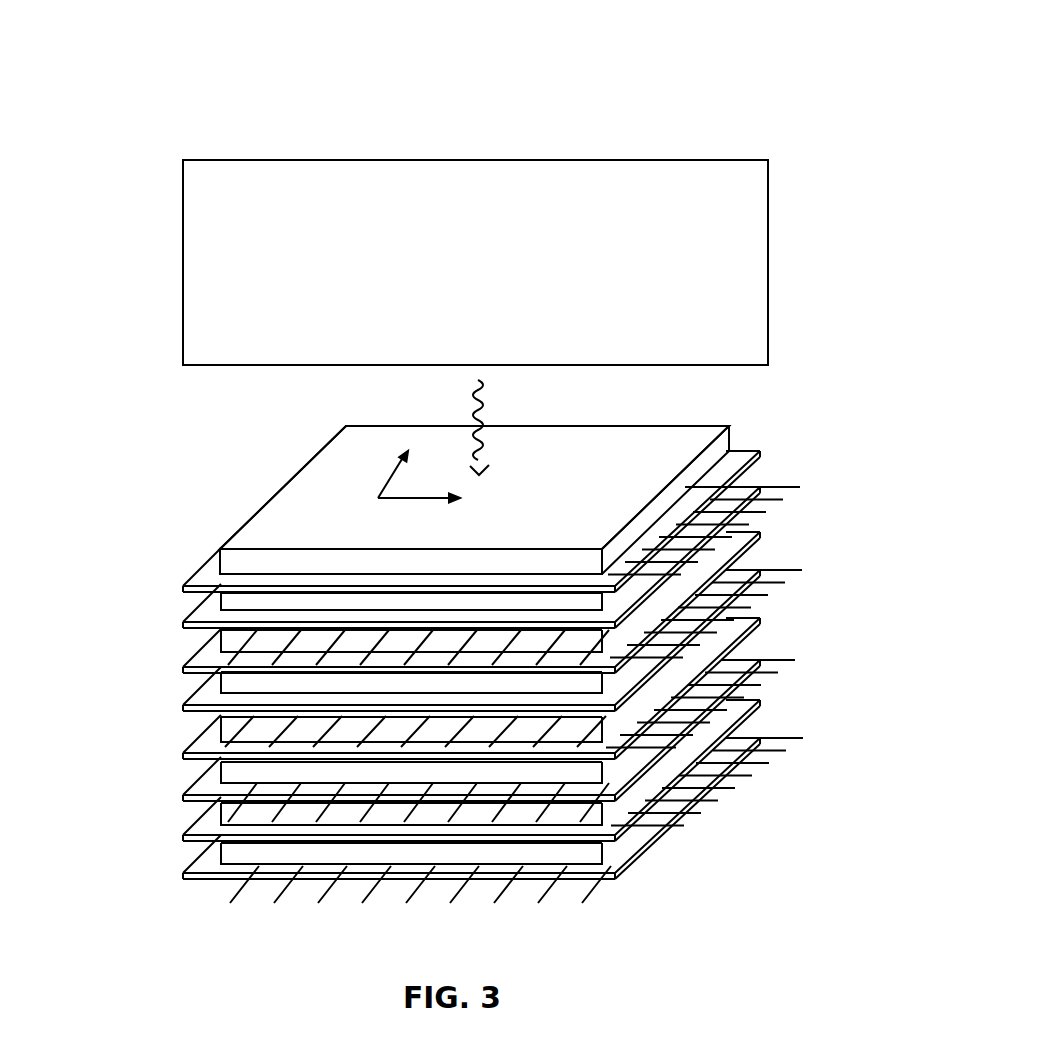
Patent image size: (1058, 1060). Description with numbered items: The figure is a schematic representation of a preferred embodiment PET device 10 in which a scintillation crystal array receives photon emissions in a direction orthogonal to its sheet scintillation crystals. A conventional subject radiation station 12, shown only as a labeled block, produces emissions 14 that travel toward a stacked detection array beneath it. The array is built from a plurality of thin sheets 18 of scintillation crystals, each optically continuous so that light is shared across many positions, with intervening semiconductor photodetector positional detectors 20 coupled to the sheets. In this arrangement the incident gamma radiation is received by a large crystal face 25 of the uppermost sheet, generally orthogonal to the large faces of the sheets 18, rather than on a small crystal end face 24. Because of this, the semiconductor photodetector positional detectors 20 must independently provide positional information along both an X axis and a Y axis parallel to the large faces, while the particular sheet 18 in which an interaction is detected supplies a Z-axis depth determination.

The PET device 10 is at (236, 31).
The subject radiation station 12 is at (474, 160).
The emissions 14 is at (500, 403).
The thin sheets of scintillation crystals 18 is at (333, 437).
The semiconductor photodetector positional detectors 20 is at (183, 587).
The small crystal end face 24 is at (686, 488).
The large crystal face 25 is at (620, 473).